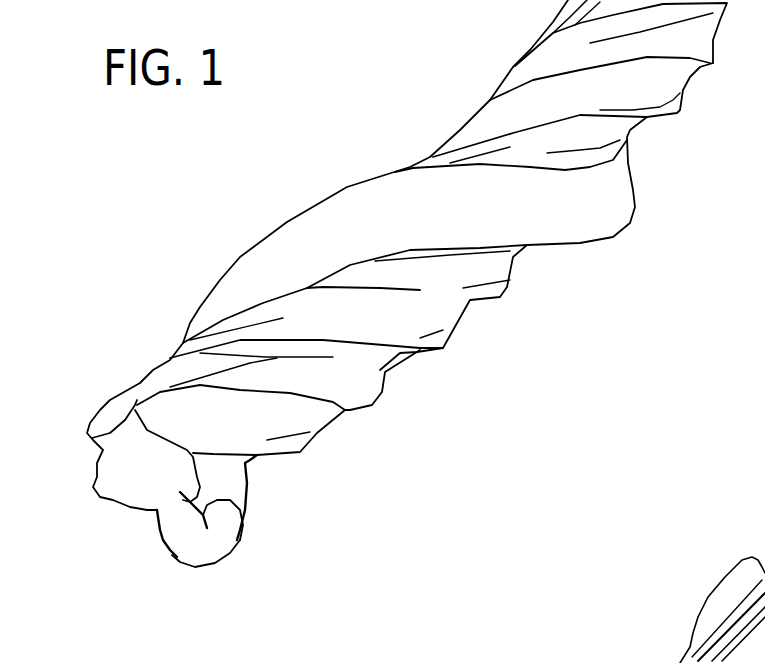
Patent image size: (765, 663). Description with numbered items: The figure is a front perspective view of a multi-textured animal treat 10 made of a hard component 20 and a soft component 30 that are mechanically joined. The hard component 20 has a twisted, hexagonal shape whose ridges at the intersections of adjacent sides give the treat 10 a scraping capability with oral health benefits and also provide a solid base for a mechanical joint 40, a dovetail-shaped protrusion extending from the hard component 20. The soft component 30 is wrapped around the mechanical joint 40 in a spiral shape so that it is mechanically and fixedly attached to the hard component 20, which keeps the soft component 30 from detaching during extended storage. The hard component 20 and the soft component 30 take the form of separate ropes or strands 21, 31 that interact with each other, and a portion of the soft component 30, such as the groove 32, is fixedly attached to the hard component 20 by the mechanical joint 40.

The multi-textured animal treat 10 is at (511, 401).
The hard component 20 is at (510, 72).
The rope or strand of the hard component 21 is at (118, 461).
The soft component 30 is at (263, 238).
The rope or strand of the soft component 31 is at (183, 563).
The groove 32 is at (222, 540).
The mechanical joint 40 is at (180, 523).